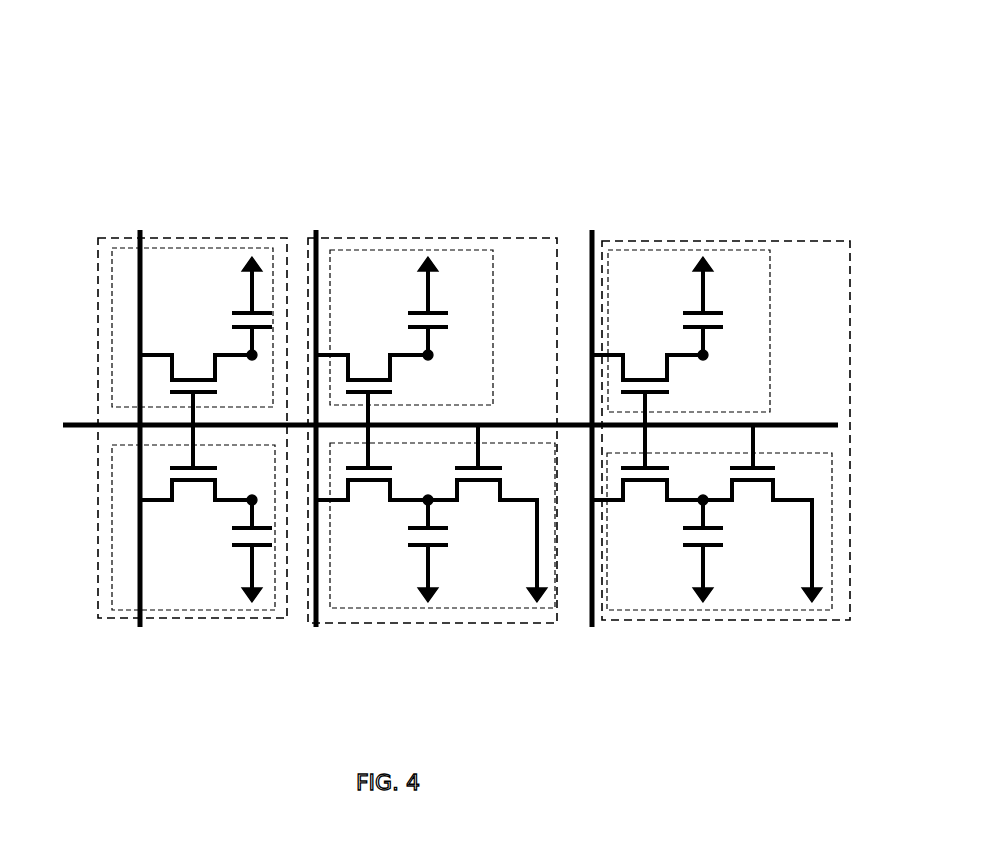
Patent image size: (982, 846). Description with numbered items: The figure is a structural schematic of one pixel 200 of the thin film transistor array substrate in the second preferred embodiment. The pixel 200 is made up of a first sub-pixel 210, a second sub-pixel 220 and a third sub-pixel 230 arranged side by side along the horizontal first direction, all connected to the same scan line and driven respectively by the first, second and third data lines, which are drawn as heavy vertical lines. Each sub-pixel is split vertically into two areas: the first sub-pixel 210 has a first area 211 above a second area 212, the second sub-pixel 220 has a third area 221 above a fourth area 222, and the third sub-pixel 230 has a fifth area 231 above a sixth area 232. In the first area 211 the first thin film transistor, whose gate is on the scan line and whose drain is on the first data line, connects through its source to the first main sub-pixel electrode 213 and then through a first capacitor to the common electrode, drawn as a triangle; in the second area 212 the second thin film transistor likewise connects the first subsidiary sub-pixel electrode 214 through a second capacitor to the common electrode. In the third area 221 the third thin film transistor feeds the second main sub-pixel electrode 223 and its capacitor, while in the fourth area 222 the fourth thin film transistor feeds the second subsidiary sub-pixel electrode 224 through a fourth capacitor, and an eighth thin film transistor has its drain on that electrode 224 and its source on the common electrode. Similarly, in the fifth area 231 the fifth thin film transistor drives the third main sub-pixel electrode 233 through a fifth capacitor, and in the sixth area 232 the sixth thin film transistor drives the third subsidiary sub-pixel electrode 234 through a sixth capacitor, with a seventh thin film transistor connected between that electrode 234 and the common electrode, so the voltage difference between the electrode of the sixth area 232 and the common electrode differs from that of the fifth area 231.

The pixel 200 is at (455, 40).
The first sub-pixel 210 is at (222, 238).
The first area 211 is at (192, 302).
The second area 212 is at (193, 552).
The first main sub-pixel electrode 213 is at (252, 360).
The first subsidiary sub-pixel electrode 214 is at (252, 496).
The second sub-pixel 220 is at (428, 238).
The third area 221 is at (404, 300).
The fourth area 222 is at (435, 553).
The second main sub-pixel electrode 223 is at (428, 360).
The second subsidiary sub-pixel electrode 224 is at (428, 496).
The third sub-pixel 230 is at (705, 241).
The fifth area 231 is at (681, 300).
The sixth area 232 is at (712, 553).
The third main sub-pixel electrode 233 is at (703, 360).
The third subsidiary sub-pixel electrode 234 is at (703, 496).